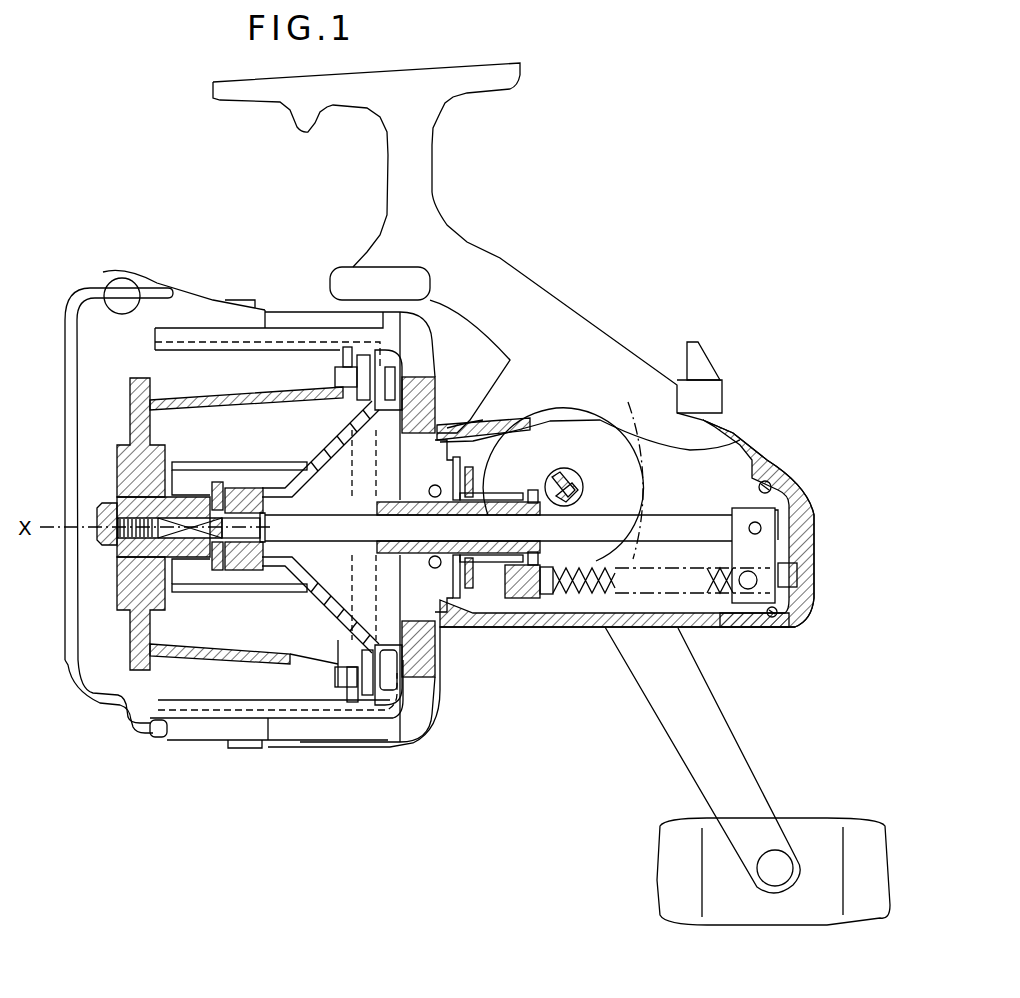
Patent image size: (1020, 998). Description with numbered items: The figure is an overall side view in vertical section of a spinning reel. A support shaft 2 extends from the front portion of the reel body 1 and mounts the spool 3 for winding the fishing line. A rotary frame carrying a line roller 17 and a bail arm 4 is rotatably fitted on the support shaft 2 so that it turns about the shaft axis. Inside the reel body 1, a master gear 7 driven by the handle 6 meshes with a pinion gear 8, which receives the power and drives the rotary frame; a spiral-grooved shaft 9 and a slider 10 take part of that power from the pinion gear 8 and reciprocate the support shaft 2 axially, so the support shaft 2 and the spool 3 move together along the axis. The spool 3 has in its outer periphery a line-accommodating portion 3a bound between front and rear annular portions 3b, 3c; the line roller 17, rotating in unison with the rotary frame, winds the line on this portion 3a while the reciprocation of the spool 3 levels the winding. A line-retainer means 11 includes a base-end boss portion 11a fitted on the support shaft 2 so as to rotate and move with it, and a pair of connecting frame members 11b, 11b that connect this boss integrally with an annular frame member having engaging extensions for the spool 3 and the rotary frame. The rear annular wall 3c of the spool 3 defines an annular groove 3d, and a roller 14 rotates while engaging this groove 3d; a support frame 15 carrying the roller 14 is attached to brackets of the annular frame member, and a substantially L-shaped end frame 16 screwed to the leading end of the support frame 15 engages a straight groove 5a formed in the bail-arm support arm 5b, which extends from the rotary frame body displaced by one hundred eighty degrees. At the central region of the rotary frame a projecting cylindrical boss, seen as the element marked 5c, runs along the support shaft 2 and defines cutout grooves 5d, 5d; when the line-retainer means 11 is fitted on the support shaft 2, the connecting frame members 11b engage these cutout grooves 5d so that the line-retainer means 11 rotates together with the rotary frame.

The reel body 1 is at (608, 337).
The support shaft 2 is at (683, 520).
The spool 3 is at (177, 655).
The line-accommodating portion 3a is at (293, 668).
The front annular portion 3b is at (147, 380).
The rear annular portion 3c is at (335, 375).
The annular groove 3d is at (387, 350).
The bail arm 4 is at (100, 704).
The straight groove 5a is at (233, 343).
The bail-arm support arm 5b is at (238, 315).
The spool cylindrical portion 5c is at (192, 462).
The cutout grooves 5d is at (210, 592).
The handle 6 is at (828, 822).
The master gear 7 is at (641, 430).
The pinion gear 8 is at (510, 497).
The spiral-grooved shaft 9 is at (565, 622).
The slider 10 is at (767, 553).
The line-retainer means 11 is at (242, 573).
The base-end boss portion 11a is at (243, 486).
The connecting frame members 11b is at (330, 433).
The roller 14 is at (362, 355).
The support frame 15 is at (395, 373).
The end frame 16 is at (343, 352).
The line roller 17 is at (122, 278).